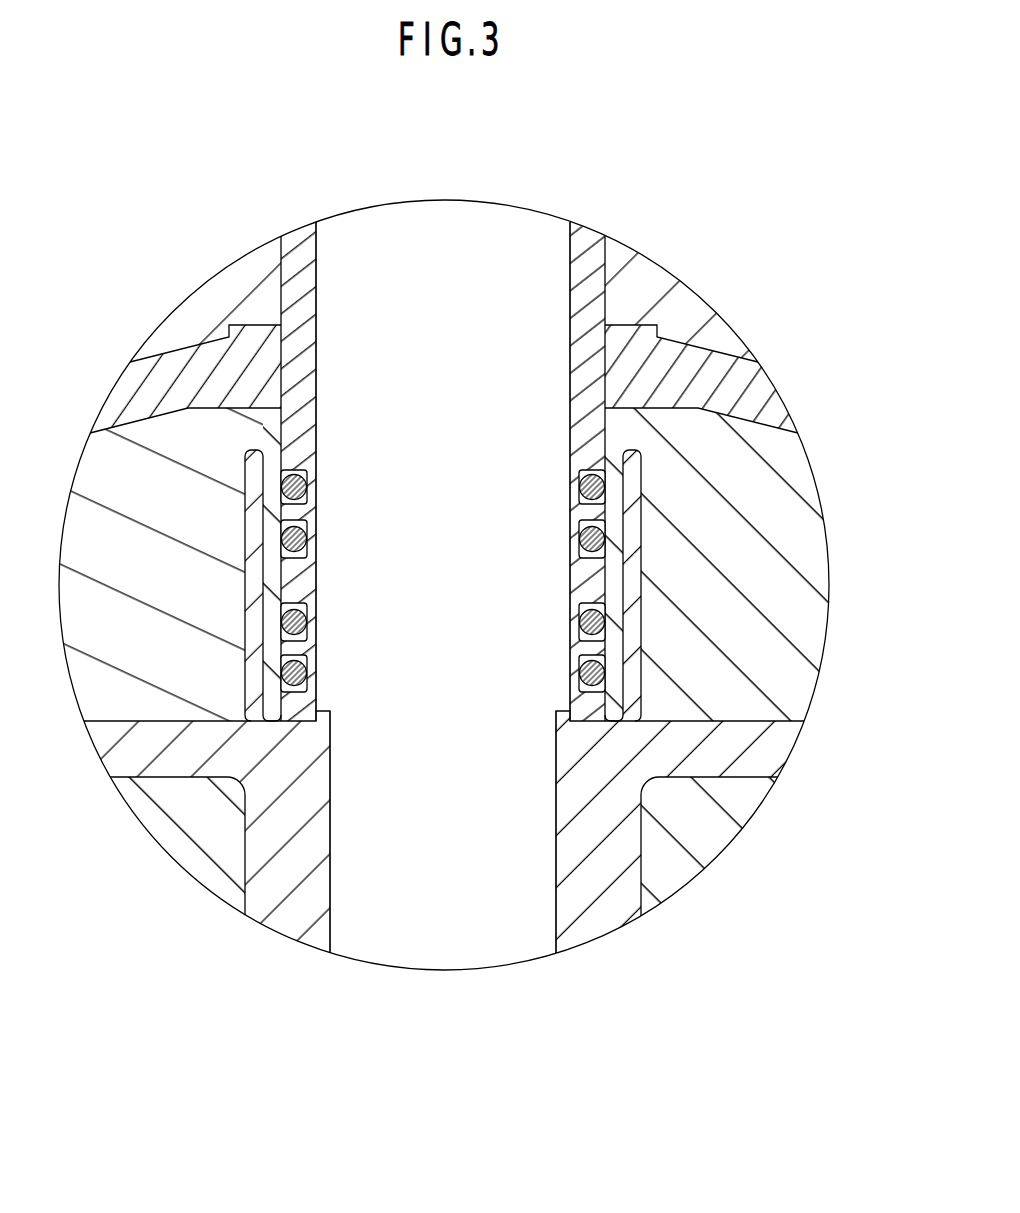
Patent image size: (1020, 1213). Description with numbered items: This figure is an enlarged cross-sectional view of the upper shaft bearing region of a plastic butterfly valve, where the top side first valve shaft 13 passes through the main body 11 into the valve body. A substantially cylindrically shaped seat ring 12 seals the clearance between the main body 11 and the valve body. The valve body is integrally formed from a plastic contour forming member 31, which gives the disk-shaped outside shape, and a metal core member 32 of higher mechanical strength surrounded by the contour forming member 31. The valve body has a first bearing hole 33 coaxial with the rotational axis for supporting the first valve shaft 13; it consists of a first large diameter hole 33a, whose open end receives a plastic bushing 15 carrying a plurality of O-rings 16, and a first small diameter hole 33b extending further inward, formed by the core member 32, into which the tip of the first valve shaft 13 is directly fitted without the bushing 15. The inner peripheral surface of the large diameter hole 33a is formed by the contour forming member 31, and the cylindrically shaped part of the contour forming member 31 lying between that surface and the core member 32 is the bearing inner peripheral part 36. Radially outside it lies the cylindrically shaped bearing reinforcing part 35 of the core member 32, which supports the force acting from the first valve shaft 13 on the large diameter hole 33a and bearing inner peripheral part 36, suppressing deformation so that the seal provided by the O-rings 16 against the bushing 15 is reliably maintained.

The main body 11 is at (195, 315).
The seat ring 12 is at (712, 378).
The first valve shaft 13 is at (501, 263).
The bushing 15 is at (298, 255).
The O-ring 16 is at (282, 482).
The contour forming member 31 is at (748, 635).
The core member 32 is at (600, 880).
The first bearing hole 33 is at (344, 787).
The first large diameter hole 33a is at (290, 594).
The first small diameter hole 33b is at (332, 882).
The bearing reinforcing part 35 is at (633, 528).
The bearing inner peripheral part 36 is at (612, 584).